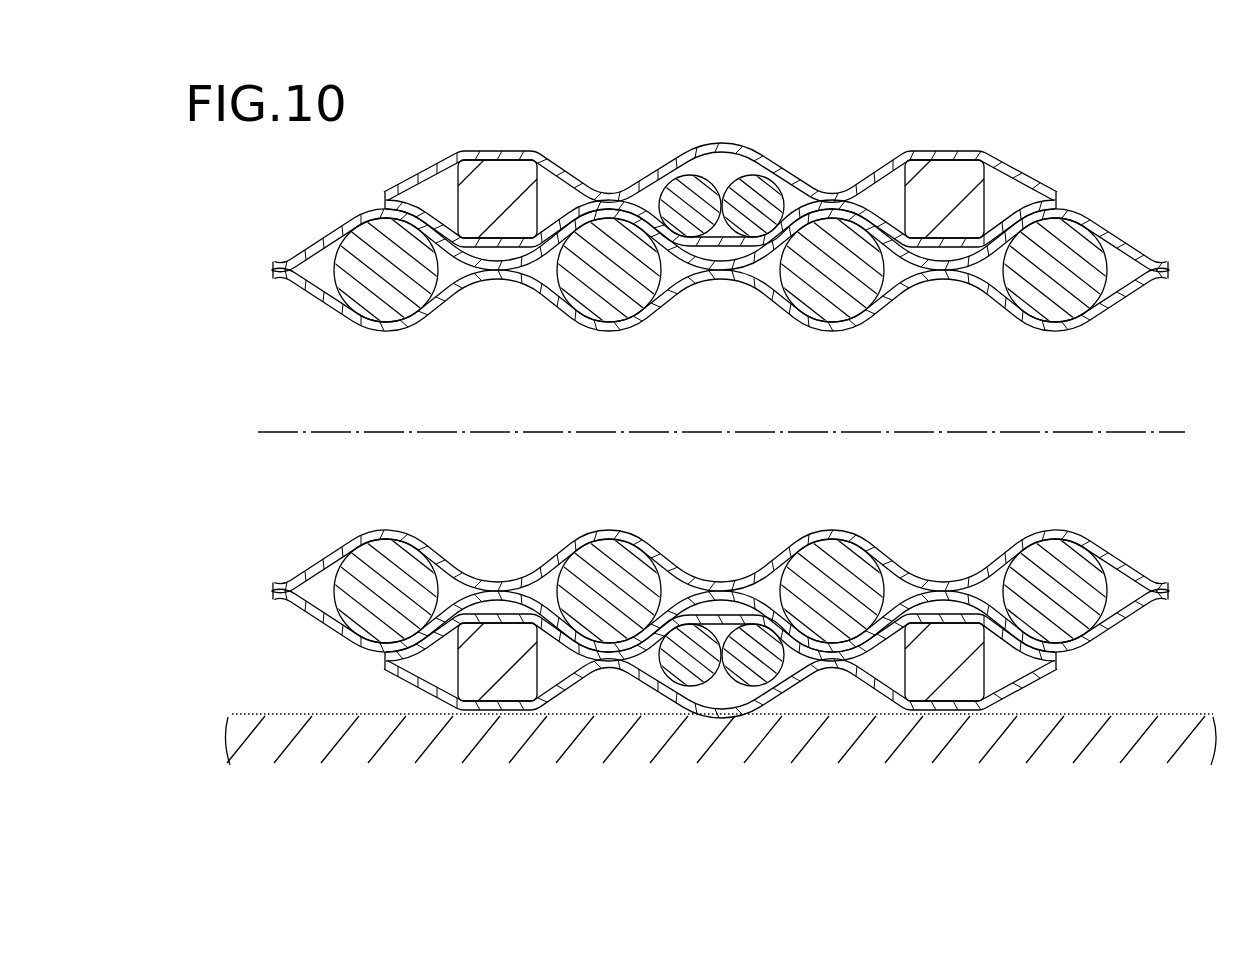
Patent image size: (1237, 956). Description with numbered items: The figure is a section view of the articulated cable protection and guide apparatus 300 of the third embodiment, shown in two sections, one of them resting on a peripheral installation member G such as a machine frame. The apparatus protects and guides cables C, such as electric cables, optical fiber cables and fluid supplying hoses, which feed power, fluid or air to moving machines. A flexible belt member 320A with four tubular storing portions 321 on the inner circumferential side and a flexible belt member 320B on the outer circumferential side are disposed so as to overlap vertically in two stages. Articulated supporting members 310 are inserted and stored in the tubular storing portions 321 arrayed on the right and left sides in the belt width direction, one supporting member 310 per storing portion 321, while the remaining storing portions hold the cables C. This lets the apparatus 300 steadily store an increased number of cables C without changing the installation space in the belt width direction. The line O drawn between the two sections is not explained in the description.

The articulated cable protection and guide apparatus 300 is at (721, 435).
The articulated supporting member 310 is at (498, 170).
The flexible belt member 320A is at (703, 585).
The flexible belt member 320B is at (728, 782).
The tubular storing portion 321 is at (721, 435).
The cable C is at (680, 177).
The peripheral installation member G is at (1142, 771).
The center axis O is at (721, 432).